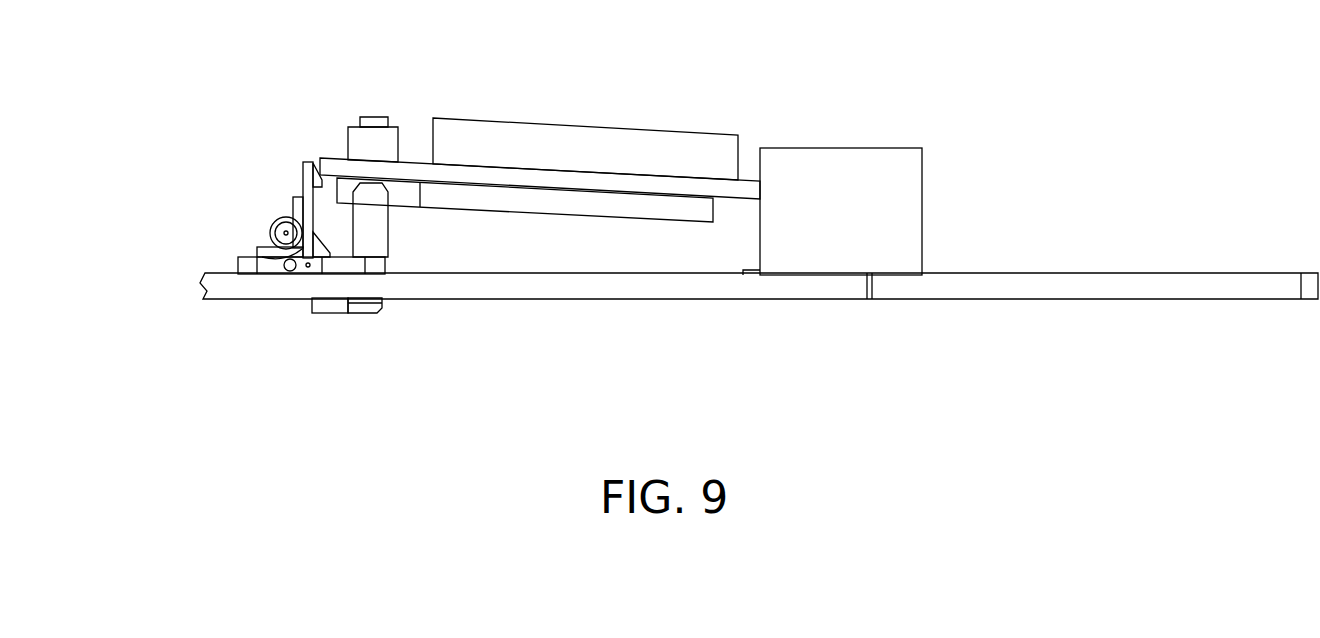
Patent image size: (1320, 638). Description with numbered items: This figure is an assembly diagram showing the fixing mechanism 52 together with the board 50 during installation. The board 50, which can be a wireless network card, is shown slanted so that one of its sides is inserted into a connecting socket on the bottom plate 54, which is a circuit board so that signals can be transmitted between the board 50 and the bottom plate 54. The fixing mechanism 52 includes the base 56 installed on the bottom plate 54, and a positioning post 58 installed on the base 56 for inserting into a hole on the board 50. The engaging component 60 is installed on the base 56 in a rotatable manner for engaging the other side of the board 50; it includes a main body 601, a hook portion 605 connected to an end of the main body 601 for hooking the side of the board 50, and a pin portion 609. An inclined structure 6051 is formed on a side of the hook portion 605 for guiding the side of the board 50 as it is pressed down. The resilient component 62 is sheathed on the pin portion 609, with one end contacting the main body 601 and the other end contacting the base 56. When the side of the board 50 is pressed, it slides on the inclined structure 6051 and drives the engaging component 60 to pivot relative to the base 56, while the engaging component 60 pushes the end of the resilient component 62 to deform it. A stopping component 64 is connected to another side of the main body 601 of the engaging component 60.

The board 50 is at (412, 167).
The fixing mechanism 52 is at (759, 338).
The bottom plate 54 is at (687, 292).
The base 56 is at (350, 263).
The positioning post 58 is at (378, 232).
The engaging component 60 is at (214, 206).
The main body 601 is at (238, 257).
The hook portion 605 is at (300, 187).
The inclined structure 6051 is at (310, 182).
The pin portion 609 is at (268, 232).
The resilient component 62 is at (272, 224).
The stopping component 64 is at (323, 253).